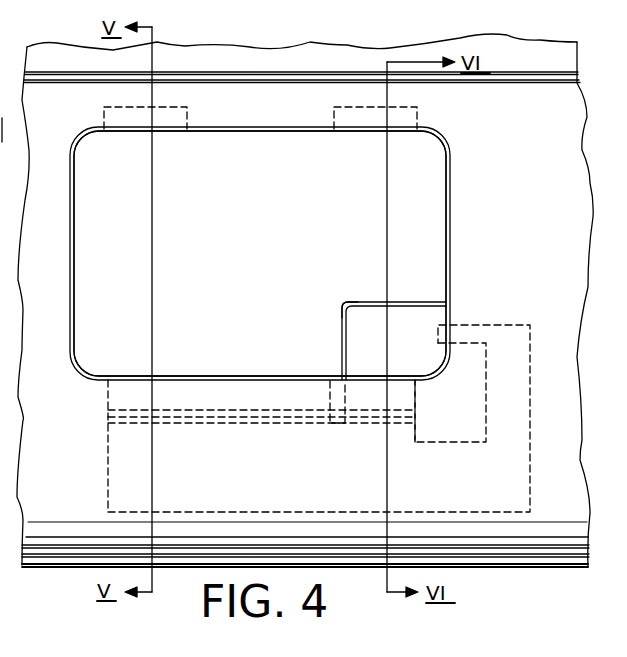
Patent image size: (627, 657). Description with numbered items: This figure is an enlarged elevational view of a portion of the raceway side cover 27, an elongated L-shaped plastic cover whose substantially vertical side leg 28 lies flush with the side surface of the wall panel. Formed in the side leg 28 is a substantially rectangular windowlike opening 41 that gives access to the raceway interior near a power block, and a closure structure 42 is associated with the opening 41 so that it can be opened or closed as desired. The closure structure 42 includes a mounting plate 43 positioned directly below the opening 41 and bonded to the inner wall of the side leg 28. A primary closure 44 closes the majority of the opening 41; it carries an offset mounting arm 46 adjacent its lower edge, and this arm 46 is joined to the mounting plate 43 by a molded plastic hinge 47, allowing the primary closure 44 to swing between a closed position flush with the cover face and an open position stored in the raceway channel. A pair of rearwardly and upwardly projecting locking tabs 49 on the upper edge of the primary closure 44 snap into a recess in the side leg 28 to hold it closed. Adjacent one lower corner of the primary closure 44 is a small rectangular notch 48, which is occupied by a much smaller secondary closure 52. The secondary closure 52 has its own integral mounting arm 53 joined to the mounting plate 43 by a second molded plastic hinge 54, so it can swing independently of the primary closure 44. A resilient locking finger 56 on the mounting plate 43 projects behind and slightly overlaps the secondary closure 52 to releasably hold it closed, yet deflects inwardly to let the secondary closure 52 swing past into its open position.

The side cover 27 is at (586, 406).
The side leg 28 is at (569, 273).
The opening 41 is at (451, 200).
The closure structure 42 is at (457, 237).
The mounting plate 43 is at (225, 497).
The primary closure 44 is at (267, 160).
The mounting arm 46 is at (135, 393).
The hinge 47 is at (165, 420).
The notch 48 is at (360, 310).
The locking tabs 49 is at (168, 113).
The secondary closure 52 is at (360, 340).
The mounting arm 53 is at (362, 400).
The hinge 54 is at (375, 423).
The locking finger 56 is at (462, 332).